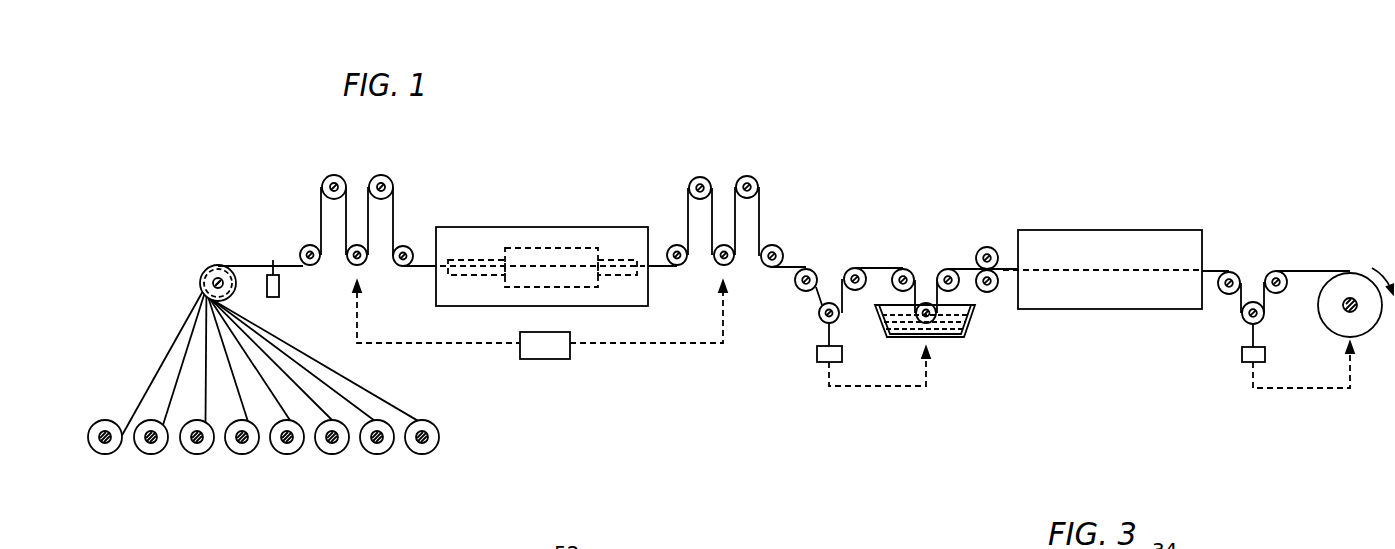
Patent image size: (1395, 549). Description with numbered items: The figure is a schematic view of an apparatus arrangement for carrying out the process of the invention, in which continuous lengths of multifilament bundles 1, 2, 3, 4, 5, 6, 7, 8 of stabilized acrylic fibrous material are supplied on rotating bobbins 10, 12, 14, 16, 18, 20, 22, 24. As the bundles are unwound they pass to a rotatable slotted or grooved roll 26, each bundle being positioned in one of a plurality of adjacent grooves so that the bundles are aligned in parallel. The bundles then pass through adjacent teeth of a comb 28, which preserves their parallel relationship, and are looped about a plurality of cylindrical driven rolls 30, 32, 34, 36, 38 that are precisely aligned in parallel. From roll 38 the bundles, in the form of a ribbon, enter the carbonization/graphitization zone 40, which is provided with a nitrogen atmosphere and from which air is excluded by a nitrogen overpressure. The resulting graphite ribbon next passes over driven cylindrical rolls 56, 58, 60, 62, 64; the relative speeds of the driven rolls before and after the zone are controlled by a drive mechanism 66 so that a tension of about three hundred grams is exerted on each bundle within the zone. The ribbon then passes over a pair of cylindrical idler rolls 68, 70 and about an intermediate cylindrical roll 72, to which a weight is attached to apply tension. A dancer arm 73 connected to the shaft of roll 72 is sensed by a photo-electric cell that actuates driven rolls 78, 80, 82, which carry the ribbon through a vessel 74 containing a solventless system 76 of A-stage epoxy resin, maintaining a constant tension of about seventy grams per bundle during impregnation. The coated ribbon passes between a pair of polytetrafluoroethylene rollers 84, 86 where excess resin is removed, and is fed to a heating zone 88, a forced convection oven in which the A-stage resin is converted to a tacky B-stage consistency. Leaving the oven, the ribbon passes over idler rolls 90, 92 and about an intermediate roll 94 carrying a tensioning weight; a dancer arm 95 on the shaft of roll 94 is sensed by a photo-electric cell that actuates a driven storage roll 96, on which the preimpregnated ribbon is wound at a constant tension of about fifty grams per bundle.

The bundle 1 is at (142, 398).
The bundle 2 is at (171, 399).
The bundle 3 is at (206, 399).
The bundle 4 is at (240, 399).
The bundle 5 is at (276, 399).
The bundle 6 is at (310, 399).
The bundle 7 is at (345, 399).
The bundle 8 is at (381, 399).
The rotating bobbin 10 is at (113, 452).
The rotating bobbin 12 is at (159, 452).
The rotating bobbin 14 is at (205, 452).
The rotating bobbin 16 is at (250, 452).
The rotating bobbin 18 is at (295, 452).
The rotating bobbin 20 is at (340, 452).
The rotating bobbin 22 is at (385, 452).
The rotating bobbin 24 is at (430, 452).
The slotted or grooved roll 26 is at (220, 264).
The comb 28 is at (279, 285).
The cylindrical driven roll 30 is at (306, 245).
The cylindrical driven roll 32 is at (330, 176).
The cylindrical driven roll 34 is at (364, 262).
The cylindrical driven roll 36 is at (377, 178).
The cylindrical driven roll 38 is at (404, 246).
The carbonization/graphitization zone 40 is at (586, 227).
The driven cylindrical roll 56 is at (672, 245).
The driven cylindrical roll 58 is at (700, 177).
The driven cylindrical roll 60 is at (717, 263).
The driven cylindrical roll 62 is at (749, 176).
The driven cylindrical roll 64 is at (776, 246).
The drive mechanism 66 is at (555, 359).
The cylindrical idler roll 68 is at (798, 285).
The cylindrical idler roll 70 is at (848, 270).
The intermediate cylindrical roll 72 is at (820, 316).
The dancer arm 73 is at (828, 336).
The vessel 74 is at (883, 330).
The solventless system 76 is at (953, 330).
The driven roll 78 is at (903, 269).
The driven roll 80 is at (925, 303).
The driven roll 82 is at (948, 269).
The polytetrafluoroethylene roller 84 is at (980, 250).
The polytetrafluoroethylene roller 86 is at (989, 292).
The heating zone 88 is at (1123, 230).
The idler roll 90 is at (1232, 272).
The idler roll 92 is at (1273, 271).
The intermediate roll 94 is at (1265, 315).
The dancer arm 95 is at (1252, 333).
The driven storage roll 96 is at (1377, 322).